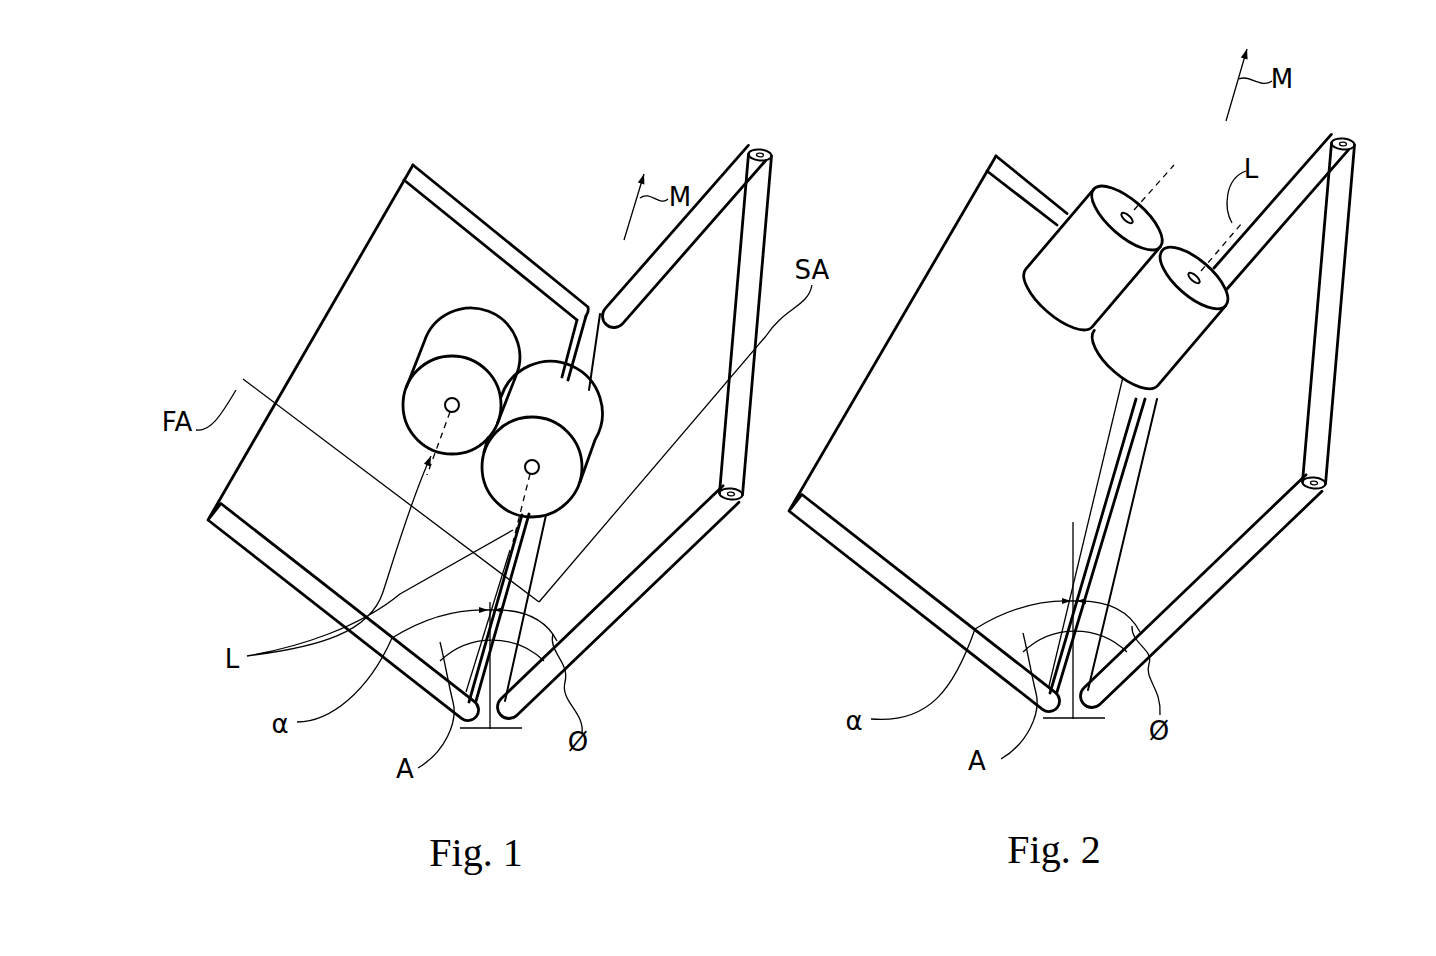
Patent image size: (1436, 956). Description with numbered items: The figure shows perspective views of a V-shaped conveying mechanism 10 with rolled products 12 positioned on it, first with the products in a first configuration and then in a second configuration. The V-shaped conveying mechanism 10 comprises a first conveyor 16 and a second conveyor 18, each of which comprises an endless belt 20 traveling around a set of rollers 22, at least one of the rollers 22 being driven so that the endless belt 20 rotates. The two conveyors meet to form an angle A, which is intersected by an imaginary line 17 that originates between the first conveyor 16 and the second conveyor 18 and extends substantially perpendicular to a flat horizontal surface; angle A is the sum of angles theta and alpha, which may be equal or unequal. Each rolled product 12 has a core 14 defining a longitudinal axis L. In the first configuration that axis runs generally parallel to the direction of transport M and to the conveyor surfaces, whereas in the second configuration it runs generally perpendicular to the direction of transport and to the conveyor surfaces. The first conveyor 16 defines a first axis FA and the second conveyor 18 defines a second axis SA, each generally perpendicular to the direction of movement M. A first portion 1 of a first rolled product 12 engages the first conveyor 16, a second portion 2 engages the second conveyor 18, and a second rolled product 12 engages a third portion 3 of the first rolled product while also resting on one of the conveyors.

In FIG. 1, the first portion 1 is at (494, 500).
In FIG. 1, the second portion 2 is at (582, 497).
In FIG. 1, the third portion 3 is at (488, 432).
In FIG. 1, the V-shaped conveying mechanism 10 is at (760, 106).
In FIG. 2, the V-shaped conveying mechanism 10 is at (1142, 165).
In FIG. 1, the rolled product 12 is at (458, 330).
In FIG. 2, the rolled product 12 is at (1094, 188).
In FIG. 1, the core 14 is at (443, 403).
In FIG. 2, the core 14 is at (1136, 221).
In FIG. 1, the first conveyor 16 is at (398, 672).
In FIG. 2, the first conveyor 16 is at (903, 605).
In FIG. 1, the imaginary line 17 is at (476, 728).
In FIG. 2, the imaginary line 17 is at (1057, 722).
In FIG. 1, the second conveyor 18 is at (590, 657).
In FIG. 2, the second conveyor 18 is at (1200, 617).
In FIG. 1, the endless belt 20 is at (396, 226).
In FIG. 2, the endless belt 20 is at (943, 260).
In FIG. 1, the rollers 22 is at (412, 160).
In FIG. 2, the rollers 22 is at (995, 155).